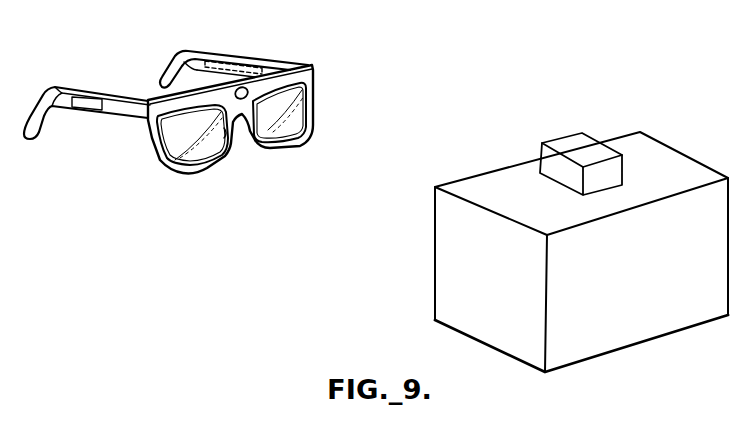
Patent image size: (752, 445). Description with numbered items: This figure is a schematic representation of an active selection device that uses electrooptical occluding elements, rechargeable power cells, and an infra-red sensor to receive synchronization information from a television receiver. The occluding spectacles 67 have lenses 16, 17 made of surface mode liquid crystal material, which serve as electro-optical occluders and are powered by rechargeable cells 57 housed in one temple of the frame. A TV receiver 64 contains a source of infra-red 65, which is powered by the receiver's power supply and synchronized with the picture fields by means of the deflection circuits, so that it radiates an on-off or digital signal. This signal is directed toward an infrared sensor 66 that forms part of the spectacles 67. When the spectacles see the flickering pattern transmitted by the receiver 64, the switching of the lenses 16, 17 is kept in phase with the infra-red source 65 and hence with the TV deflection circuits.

The lens 16 is at (283, 128).
The lens 17 is at (200, 150).
The rechargeable cells 57 is at (217, 56).
The TV receiver 64 is at (655, 138).
The source of infra-red 65 is at (563, 137).
The infrared sensor 66 is at (245, 87).
The occluding spectacles 67 is at (316, 70).